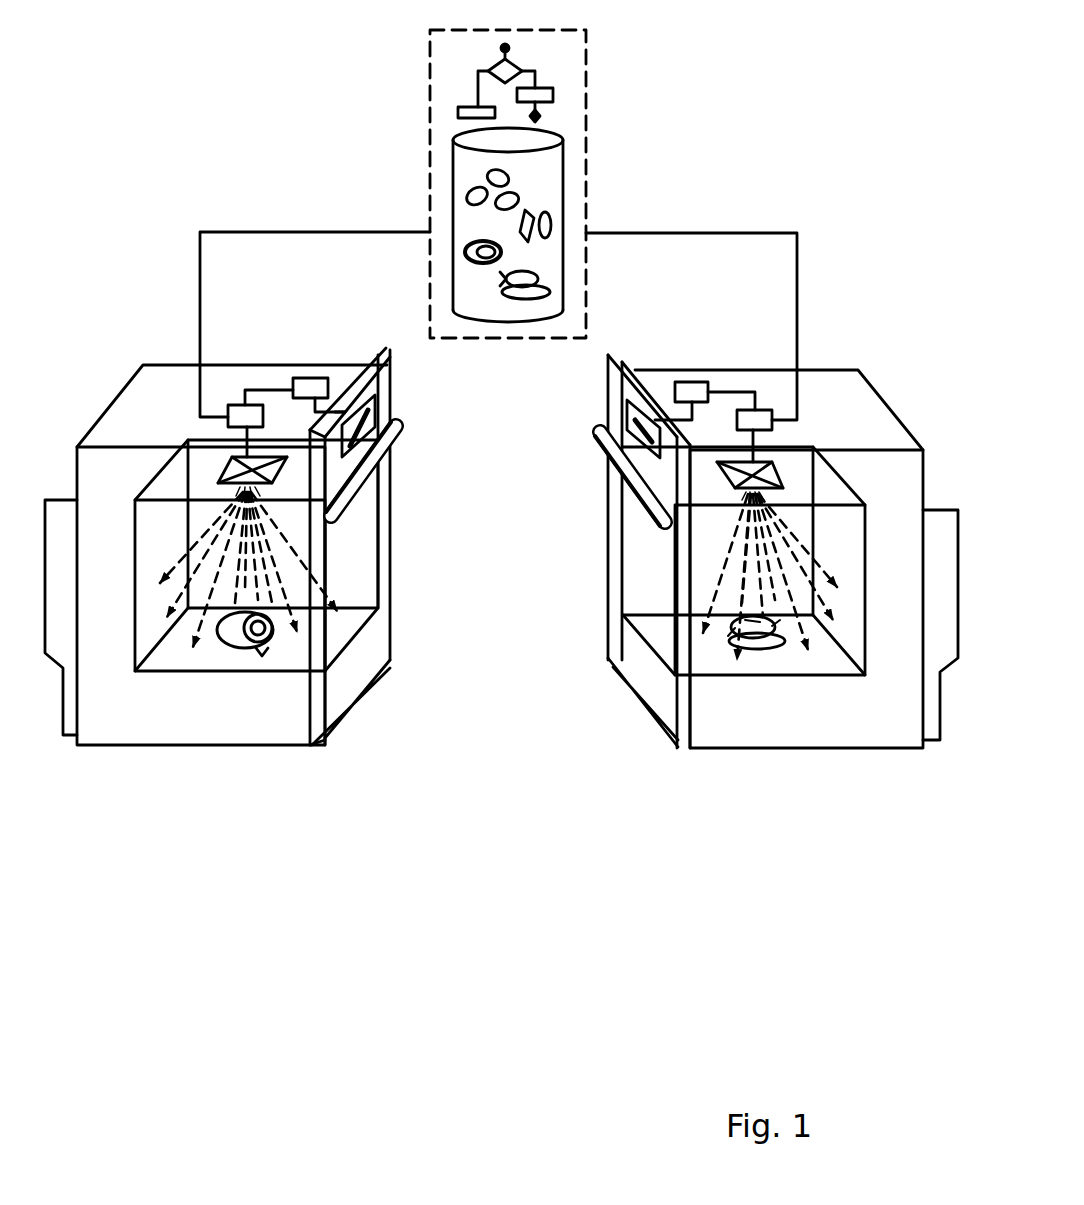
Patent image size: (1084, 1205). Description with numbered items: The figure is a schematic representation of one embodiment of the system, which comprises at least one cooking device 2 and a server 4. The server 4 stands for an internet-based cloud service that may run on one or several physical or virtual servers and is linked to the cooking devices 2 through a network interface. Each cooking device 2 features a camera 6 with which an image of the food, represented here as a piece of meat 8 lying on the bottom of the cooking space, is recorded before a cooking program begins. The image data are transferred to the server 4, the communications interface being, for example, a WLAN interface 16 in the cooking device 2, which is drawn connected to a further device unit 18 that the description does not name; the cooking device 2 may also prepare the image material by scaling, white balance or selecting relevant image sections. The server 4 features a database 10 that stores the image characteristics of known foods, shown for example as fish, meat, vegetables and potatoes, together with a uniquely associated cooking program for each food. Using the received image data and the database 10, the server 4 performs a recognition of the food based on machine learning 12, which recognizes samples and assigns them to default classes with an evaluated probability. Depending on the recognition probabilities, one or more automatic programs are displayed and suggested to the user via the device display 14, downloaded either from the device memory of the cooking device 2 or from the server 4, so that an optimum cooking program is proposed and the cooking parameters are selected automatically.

The cooking device 2 is at (385, 742).
The server 4 is at (602, 205).
The camera 6 is at (224, 467).
The piece of meat 8 is at (240, 660).
The database 10 is at (547, 197).
The machine learning 12 is at (464, 93).
The device display 14 is at (380, 415).
The WLAN interface 16 is at (245, 405).
The sensor / communication unit 18 is at (308, 378).